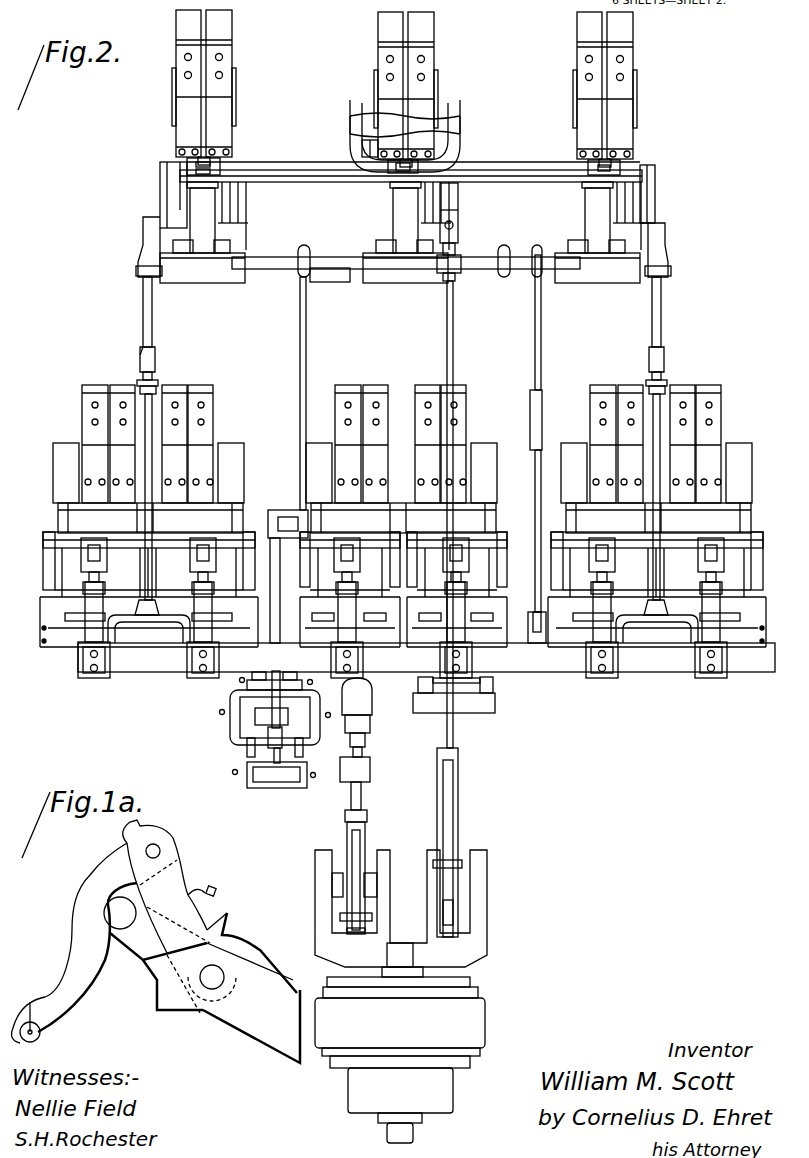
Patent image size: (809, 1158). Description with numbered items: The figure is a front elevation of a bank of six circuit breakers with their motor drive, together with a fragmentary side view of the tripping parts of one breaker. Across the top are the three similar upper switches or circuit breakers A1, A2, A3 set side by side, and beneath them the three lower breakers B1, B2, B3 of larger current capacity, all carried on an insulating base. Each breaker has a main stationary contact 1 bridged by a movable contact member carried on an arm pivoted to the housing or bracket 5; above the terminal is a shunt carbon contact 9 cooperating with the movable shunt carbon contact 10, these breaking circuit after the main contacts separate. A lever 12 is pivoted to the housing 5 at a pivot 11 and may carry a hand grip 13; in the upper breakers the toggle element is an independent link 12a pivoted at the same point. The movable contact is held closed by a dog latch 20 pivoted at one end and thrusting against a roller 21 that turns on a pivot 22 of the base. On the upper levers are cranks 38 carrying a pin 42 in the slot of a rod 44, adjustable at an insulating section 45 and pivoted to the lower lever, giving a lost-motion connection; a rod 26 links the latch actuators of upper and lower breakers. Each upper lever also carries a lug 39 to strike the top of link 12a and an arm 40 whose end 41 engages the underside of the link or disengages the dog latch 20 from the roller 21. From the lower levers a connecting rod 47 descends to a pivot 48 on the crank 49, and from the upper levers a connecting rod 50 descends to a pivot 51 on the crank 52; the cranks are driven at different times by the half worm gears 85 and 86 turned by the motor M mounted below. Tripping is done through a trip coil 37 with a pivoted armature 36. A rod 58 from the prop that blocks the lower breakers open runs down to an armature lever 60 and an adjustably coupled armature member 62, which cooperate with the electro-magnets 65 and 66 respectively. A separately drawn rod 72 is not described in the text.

In FIG. 2, the shunt carbon contact 9 is at (195, 28).
In FIG. 2, the movable shunt carbon contact 10 is at (180, 47).
In FIG. 2, the main stationary contact 1 is at (232, 76).
In FIG. 2, the upper switch or circuit breaker A1 is at (249, 107).
In FIG. 2, the upper switch or circuit breaker A2 is at (477, 97).
In FIG. 2, the upper switch or circuit breaker A3 is at (652, 97).
In FIG. 2, the hand grip / pivot 13 is at (378, 122).
In FIG. 1A, the hand grip / pivot 13 is at (161, 850).
In FIG. 2, the housing or bracket 5 is at (238, 228).
In FIG. 2, the crank 38 is at (147, 243).
In FIG. 1A, the crank 38 is at (172, 1012).
In FIG. 2, the pin 42 is at (137, 270).
In FIG. 2, the rod 44 is at (150, 418).
In FIG. 2, the insulating section 45 is at (157, 382).
In FIG. 2, the operating rod 72 is at (306, 320).
In FIG. 2, the connecting rod 50 is at (453, 322).
In FIG. 2, the rod 26 is at (541, 340).
In FIG. 2, the lower switch or circuit breaker B1 is at (149, 459).
In FIG. 2, the lower switch or circuit breaker B2 is at (401, 459).
In FIG. 2, the lower switch or circuit breaker B3 is at (656, 459).
In FIG. 2, the rod 58 is at (270, 533).
In FIG. 2, the lever 12 is at (402, 608).
In FIG. 1A, the lever 12 is at (270, 1042).
In FIG. 2, the electro-magnet 65 is at (235, 718).
In FIG. 2, the armature lever 60 is at (248, 727).
In FIG. 2, the electro-magnet 66 is at (248, 782).
In FIG. 2, the armature member 62 is at (273, 785).
In FIG. 2, the connecting rod 47 is at (358, 792).
In FIG. 2, the worm gear 85 is at (358, 833).
In FIG. 2, the trip coil 37 is at (478, 682).
In FIG. 2, the armature 36 is at (472, 703).
In FIG. 2, the pivot 51 is at (460, 857).
In FIG. 2, the crank 52 is at (449, 887).
In FIG. 2, the worm wheel gear 86 is at (449, 930).
In FIG. 2, the pivot 48 is at (340, 917).
In FIG. 2, the crank 49 is at (348, 932).
In FIG. 2, the motor M is at (412, 1035).
In FIG. 1A, the dog latch 20 is at (78, 925).
In FIG. 1A, the roller 21 is at (42, 1034).
In FIG. 1A, the pivot 22 is at (30, 1002).
In FIG. 1A, the link 12a is at (180, 878).
In FIG. 1A, the arm end 41 is at (118, 907).
In FIG. 1A, the arm 40 is at (128, 950).
In FIG. 1A, the pivot 11 is at (212, 985).
In FIG. 1A, the lug 39 is at (235, 922).